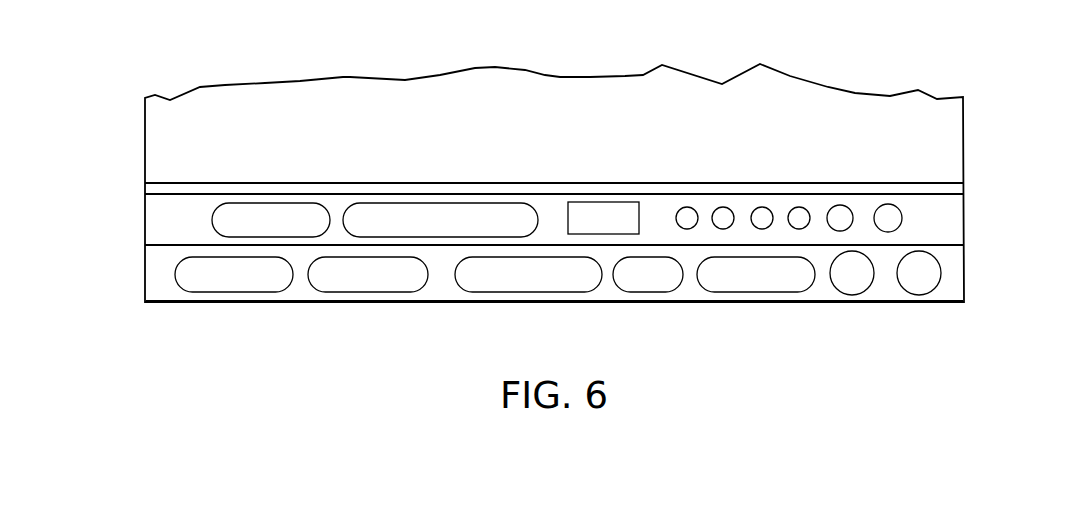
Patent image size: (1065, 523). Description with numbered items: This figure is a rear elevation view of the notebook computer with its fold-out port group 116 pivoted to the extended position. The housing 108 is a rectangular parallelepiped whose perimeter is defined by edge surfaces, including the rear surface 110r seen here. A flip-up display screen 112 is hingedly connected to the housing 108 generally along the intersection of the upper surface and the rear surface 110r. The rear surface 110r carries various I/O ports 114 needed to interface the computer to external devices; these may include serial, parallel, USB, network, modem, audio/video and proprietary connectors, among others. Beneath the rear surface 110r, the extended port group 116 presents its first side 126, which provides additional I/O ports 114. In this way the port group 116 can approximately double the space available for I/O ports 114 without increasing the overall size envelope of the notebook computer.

The housing 108 is at (966, 216).
The flip-up display screen 112 is at (290, 93).
The rear surface 110r is at (158, 211).
The I/O ports 114 is at (713, 213).
The fold-out port group 116 is at (175, 292).
The first side 126 is at (158, 268).